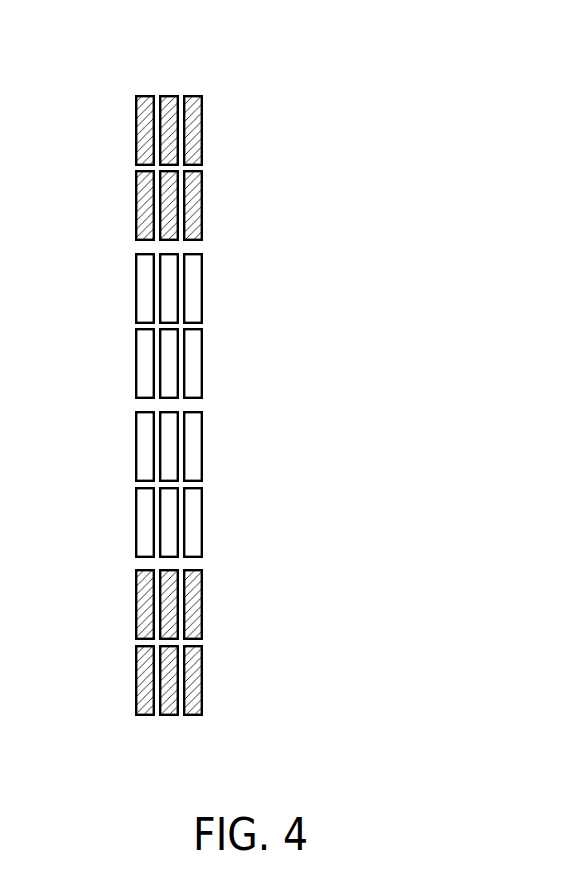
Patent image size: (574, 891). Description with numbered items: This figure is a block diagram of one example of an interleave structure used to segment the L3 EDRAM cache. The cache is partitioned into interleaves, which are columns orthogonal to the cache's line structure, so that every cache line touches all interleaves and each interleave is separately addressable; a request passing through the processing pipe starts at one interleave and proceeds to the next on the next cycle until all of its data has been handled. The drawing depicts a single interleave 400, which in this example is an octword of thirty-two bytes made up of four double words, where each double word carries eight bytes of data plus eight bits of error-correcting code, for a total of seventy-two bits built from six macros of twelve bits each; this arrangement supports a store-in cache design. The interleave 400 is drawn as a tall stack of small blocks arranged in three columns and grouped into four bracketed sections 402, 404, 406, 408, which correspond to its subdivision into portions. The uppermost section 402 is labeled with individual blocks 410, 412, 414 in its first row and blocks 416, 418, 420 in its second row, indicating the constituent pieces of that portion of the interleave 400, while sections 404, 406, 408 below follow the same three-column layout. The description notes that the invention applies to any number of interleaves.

The interleave 400 is at (268, 361).
The first layer group 402 is at (218, 125).
The second layer group 404 is at (283, 251).
The third layer group 406 is at (283, 409).
The fourth layer group 408 is at (255, 641).
The first strip 410 is at (147, 95).
The second strip 412 is at (168, 95).
The third strip 414 is at (190, 95).
The first segment 416 is at (135, 193).
The second segment 418 is at (158, 210).
The third segment 420 is at (236, 205).